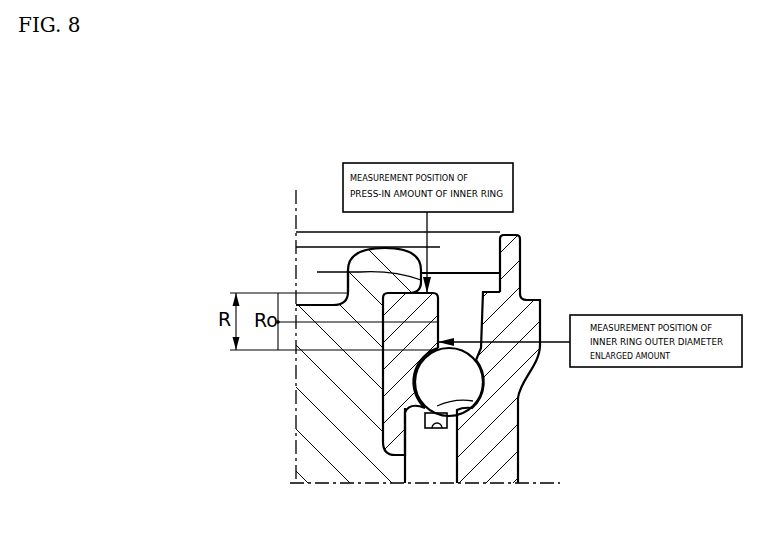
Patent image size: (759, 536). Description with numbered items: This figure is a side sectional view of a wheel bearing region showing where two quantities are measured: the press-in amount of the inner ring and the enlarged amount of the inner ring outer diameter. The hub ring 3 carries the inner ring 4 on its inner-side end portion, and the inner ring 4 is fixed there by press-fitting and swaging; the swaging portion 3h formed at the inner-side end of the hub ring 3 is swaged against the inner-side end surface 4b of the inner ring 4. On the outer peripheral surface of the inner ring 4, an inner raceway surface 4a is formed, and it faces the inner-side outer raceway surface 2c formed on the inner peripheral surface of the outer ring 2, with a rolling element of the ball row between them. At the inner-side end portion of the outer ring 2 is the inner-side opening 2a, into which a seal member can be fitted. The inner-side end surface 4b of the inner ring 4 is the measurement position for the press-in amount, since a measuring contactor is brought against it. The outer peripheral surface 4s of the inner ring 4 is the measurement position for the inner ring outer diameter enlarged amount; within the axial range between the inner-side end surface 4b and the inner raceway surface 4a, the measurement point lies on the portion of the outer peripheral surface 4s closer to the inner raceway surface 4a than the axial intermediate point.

The outer ring 2 is at (503, 458).
The inner-side opening 2a is at (499, 257).
The inner-side outer raceway surface 2c is at (436, 426).
The hub ring 3 is at (310, 463).
The swaging portion 3h is at (380, 258).
The inner ring 4 is at (390, 393).
The inner raceway surface 4a is at (422, 362).
The inner-side end surface 4b is at (317, 272).
The outer peripheral surface 4s is at (438, 327).